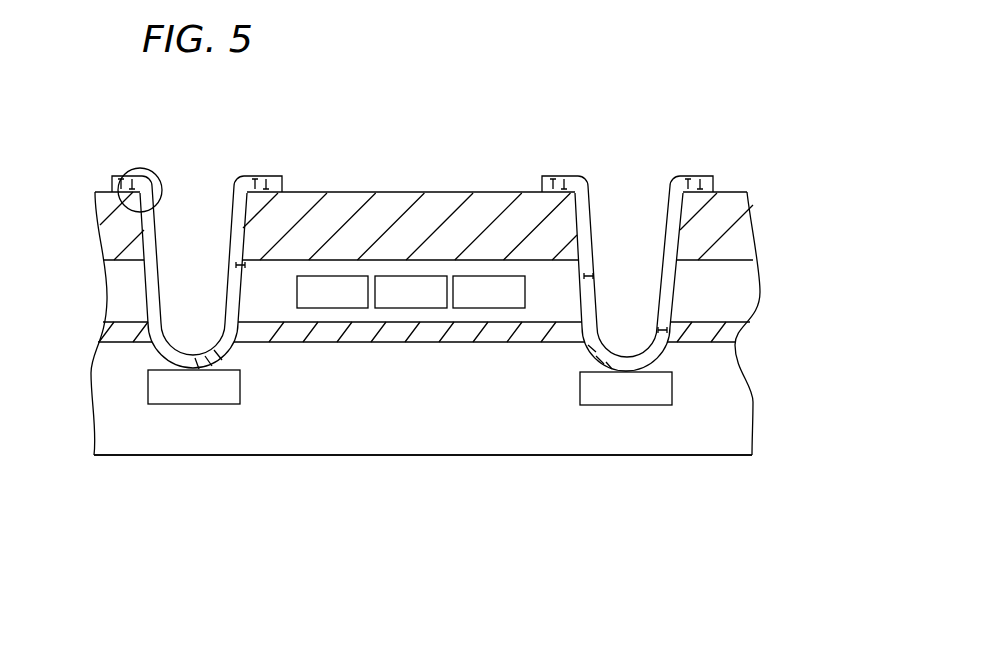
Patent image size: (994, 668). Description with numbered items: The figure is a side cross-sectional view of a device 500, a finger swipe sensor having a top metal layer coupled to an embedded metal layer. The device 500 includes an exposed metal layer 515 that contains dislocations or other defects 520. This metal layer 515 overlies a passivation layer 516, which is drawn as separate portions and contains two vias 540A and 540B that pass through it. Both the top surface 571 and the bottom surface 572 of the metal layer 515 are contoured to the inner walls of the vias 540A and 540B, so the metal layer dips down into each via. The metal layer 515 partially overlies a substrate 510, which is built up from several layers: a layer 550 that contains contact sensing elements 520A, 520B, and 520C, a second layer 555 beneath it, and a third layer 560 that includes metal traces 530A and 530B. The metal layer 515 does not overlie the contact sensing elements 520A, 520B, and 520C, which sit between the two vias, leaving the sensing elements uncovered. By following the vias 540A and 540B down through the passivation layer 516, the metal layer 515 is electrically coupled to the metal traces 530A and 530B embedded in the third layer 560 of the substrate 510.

The device 500 is at (529, 86).
The substrate 510 is at (778, 261).
The metal layer 515 is at (283, 188).
The passivation layer 516 is at (97, 212).
The dislocations or other defects 520 is at (127, 171).
The contact sensing element 520A is at (332, 292).
The contact sensing element 520B is at (411, 292).
The contact sensing element 520C is at (489, 292).
The metal trace 530A is at (194, 387).
The metal trace 530B is at (626, 388).
The via 540A is at (223, 172).
The via 540B is at (655, 172).
The layer 550 is at (114, 295).
The second layer 555 is at (113, 331).
The third layer 560 is at (103, 403).
The top surface 571 is at (596, 303).
The bottom surface 572 is at (586, 348).